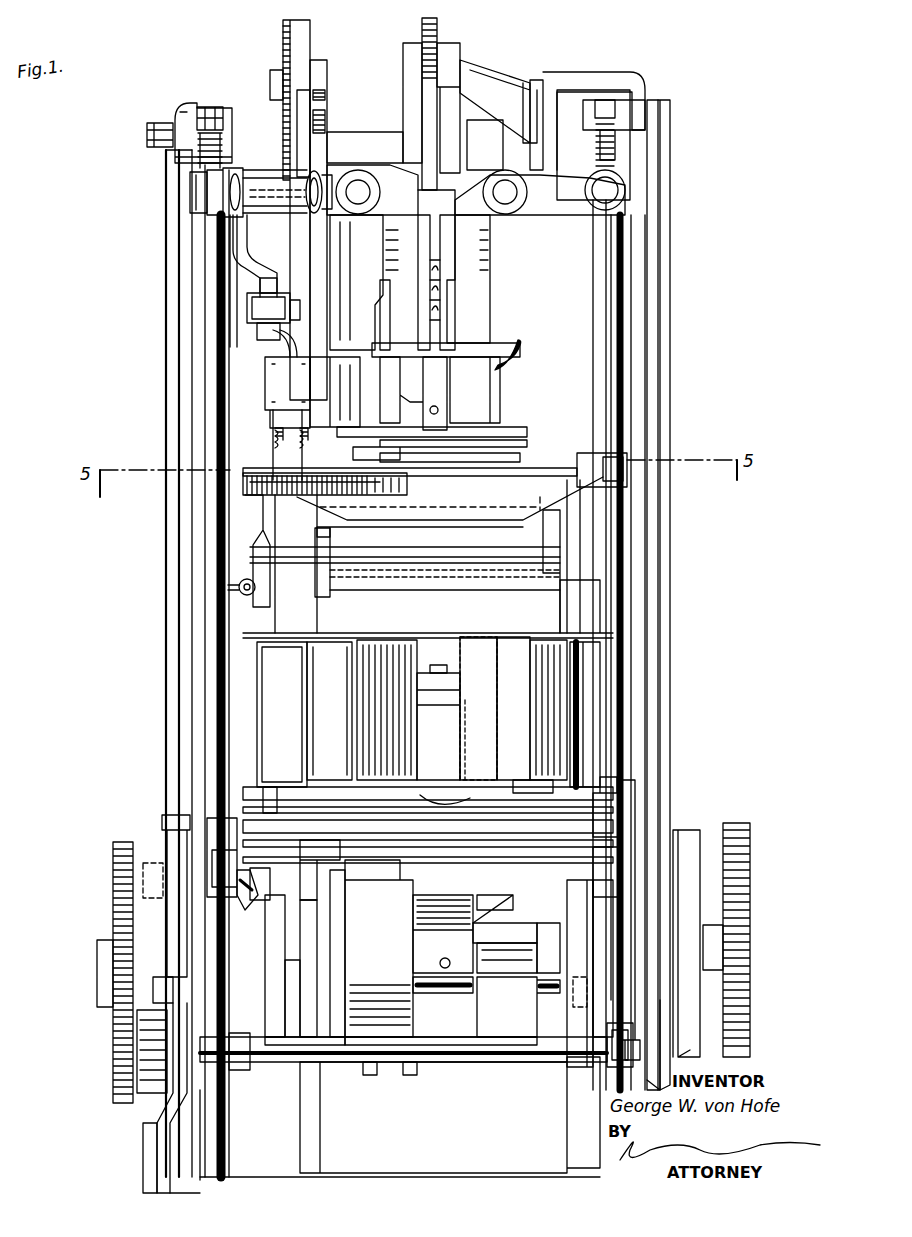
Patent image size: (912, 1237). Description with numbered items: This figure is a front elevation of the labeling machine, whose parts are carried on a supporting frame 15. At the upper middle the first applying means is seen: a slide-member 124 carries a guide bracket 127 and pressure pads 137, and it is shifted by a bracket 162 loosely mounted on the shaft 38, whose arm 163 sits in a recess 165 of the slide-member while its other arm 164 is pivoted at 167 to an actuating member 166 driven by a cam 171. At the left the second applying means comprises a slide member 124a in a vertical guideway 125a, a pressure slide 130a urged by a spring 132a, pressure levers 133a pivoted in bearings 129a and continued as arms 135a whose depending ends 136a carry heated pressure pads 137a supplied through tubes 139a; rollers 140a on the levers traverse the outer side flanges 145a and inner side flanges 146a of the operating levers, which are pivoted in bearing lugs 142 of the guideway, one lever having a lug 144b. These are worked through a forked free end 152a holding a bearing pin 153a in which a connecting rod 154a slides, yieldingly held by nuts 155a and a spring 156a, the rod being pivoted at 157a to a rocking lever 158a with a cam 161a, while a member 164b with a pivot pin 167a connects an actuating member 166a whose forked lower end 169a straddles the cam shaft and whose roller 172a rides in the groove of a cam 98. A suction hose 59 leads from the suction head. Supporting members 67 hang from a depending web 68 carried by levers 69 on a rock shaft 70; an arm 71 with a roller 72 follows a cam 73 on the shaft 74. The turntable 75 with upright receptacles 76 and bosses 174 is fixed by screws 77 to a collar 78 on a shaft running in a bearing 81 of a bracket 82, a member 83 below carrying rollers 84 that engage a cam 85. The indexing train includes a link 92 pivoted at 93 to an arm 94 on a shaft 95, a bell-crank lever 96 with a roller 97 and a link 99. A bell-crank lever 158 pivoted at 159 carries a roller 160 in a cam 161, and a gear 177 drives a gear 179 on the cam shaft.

The supporting frame 15 is at (200, 706).
The shaft 38 is at (365, 147).
The suction hose 59 is at (507, 352).
The supporting members 67 is at (333, 473).
The depending web 68 is at (445, 512).
The levers 69 is at (263, 630).
The rock shaft 70 is at (342, 798).
The arm 71 is at (320, 892).
The roller 72 is at (300, 945).
The cam 73 is at (312, 997).
The shaft 74 is at (343, 957).
The turntable 75 is at (445, 680).
The upright receptacles 76 is at (262, 722).
The screws 77 is at (436, 665).
The collar 78 is at (455, 705).
The bearing 81 is at (450, 749).
The bracket 82 is at (500, 792).
The member 83 is at (405, 843).
The rollers 84 is at (508, 908).
The cam 85 is at (476, 922).
The link 92 is at (628, 731).
The pivot 93 is at (607, 1060).
The arm 94 is at (620, 1065).
The shaft 95 is at (468, 1062).
The bell-crank lever 96 is at (182, 1110).
The roller 97 is at (160, 990).
The cam 98 is at (140, 918).
The link 99 is at (160, 1140).
The slide-member 124 is at (447, 58).
The slide member 124a is at (320, 110).
The vertical guideway 125a is at (364, 282).
The guide bracket 127 is at (470, 290).
The bearings 129a is at (262, 338).
The pressure slide 130a is at (305, 44).
The spring 132a is at (280, 80).
The pressure levers 133a is at (262, 262).
The arms 135a is at (266, 392).
The depending ends 136a is at (268, 392).
The pressure pads 137 is at (462, 410).
The pressure pads 137a is at (333, 365).
The springs 139a is at (300, 445).
The rollers 140a is at (232, 238).
The shaft 142 is at (272, 178).
The member 144b is at (262, 300).
The outer side flanges 145a is at (242, 322).
The inner side flanges 146a is at (258, 283).
The forked free end 152a is at (195, 186).
The bearing pin 153a is at (212, 200).
The connecting rod 154a is at (215, 535).
The nuts 155a is at (204, 100).
The spring 156a is at (224, 146).
The pivot 157a is at (228, 850).
The bell-crank lever 158 is at (598, 927).
The rocking lever 158a is at (246, 905).
The pivot 159 is at (632, 857).
The roller 160 is at (573, 1005).
The cam 161 is at (575, 955).
The cam 161a is at (253, 1072).
The bracket 162 is at (616, 72).
The arm 163 is at (528, 76).
The arm 164 is at (645, 100).
The member 164b is at (222, 98).
The recess 165 is at (468, 90).
The actuating member 166 is at (662, 333).
The actuating member 166a is at (166, 382).
The pivot 167 is at (671, 122).
The pivot pin 167a is at (147, 136).
The forked lower end 169a is at (165, 830).
The cam 171 is at (702, 840).
The roller 172a is at (140, 870).
The bosses 174 is at (378, 785).
The gear 177 is at (743, 888).
The gear 179 is at (127, 1047).